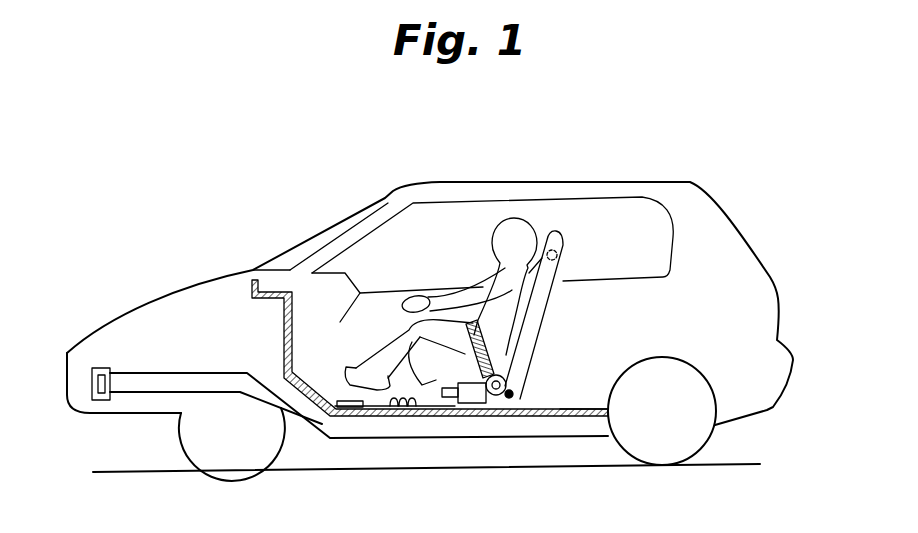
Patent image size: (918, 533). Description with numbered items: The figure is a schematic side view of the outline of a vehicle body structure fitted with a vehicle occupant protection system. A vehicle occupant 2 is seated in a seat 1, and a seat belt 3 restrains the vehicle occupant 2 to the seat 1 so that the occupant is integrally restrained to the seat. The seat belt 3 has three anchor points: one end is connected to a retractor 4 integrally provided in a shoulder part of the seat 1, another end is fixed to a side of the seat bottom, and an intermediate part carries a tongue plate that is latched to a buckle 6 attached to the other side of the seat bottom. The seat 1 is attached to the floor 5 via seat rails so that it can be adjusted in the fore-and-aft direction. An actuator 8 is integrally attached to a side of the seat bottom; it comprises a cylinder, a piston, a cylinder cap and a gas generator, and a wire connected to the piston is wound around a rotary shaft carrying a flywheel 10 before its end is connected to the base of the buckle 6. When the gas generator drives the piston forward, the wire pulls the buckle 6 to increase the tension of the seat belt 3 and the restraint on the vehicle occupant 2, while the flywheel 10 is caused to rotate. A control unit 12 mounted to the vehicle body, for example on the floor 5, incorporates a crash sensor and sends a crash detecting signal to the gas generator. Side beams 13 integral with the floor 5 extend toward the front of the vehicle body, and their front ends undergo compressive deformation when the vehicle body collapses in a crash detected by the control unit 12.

The seat 1 is at (551, 233).
The vehicle occupant 2 is at (503, 220).
The seat belt 3 is at (538, 250).
The retractor 4 is at (558, 250).
The floor 5 is at (593, 405).
The buckle 6 is at (465, 355).
The actuator 8 is at (486, 414).
The flywheel 10 is at (512, 382).
The control unit 12 is at (325, 402).
The side beams 13 is at (171, 373).